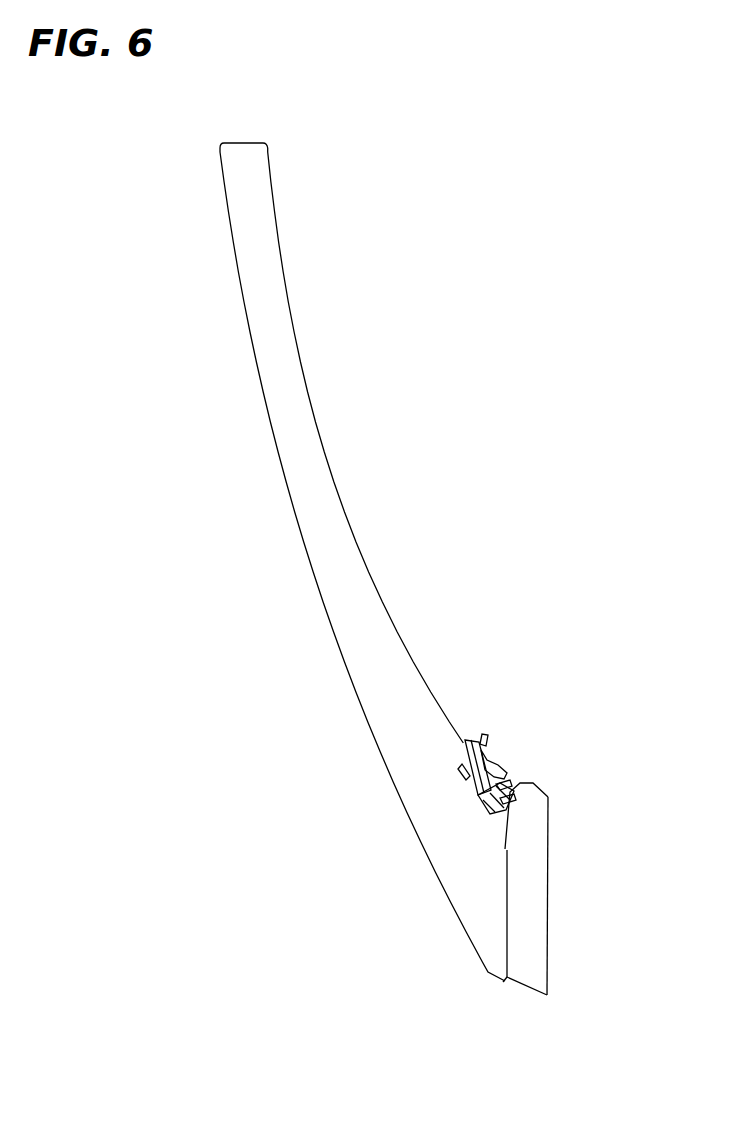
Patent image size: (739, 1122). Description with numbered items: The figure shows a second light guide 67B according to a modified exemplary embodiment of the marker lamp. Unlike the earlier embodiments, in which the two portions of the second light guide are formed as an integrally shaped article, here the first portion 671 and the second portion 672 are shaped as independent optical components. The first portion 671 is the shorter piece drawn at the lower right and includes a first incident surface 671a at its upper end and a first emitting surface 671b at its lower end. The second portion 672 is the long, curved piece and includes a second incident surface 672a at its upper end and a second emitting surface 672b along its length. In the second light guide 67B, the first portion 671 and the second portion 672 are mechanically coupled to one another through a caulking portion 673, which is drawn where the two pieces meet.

The second light guide 67B is at (413, 463).
The second portion 672 is at (310, 523).
The second incident surface 672a is at (242, 143).
The second emitting surface 672b is at (329, 625).
The first portion 671 is at (535, 880).
The first incident surface 671a is at (540, 783).
The first emitting surface 671b is at (523, 992).
The caulking portion 673 is at (501, 753).